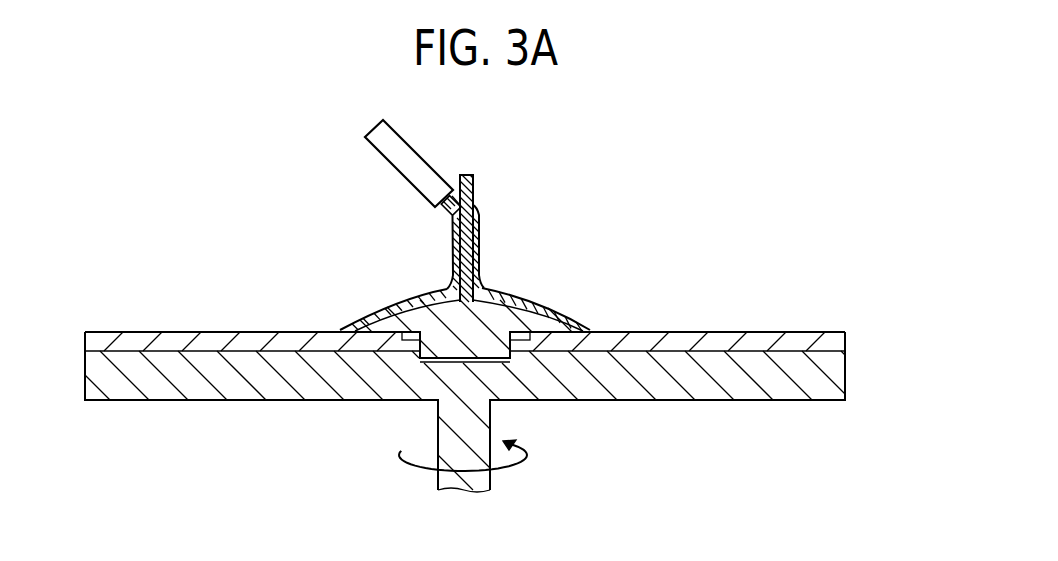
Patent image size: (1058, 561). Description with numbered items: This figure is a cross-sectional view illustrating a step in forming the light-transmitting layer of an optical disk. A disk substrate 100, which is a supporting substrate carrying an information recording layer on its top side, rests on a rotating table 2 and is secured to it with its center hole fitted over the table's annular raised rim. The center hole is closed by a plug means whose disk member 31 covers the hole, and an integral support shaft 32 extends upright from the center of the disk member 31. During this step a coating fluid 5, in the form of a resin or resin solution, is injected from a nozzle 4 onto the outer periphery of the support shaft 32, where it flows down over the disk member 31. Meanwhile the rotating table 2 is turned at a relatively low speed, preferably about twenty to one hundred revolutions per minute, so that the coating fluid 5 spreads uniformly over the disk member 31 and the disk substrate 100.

The rotating table 2 is at (840, 385).
The disk substrate 100 is at (840, 345).
The disk member 31 is at (500, 305).
The support shaft 32 is at (476, 197).
The coating fluid 5 is at (455, 245).
The nozzle 4 is at (415, 178).